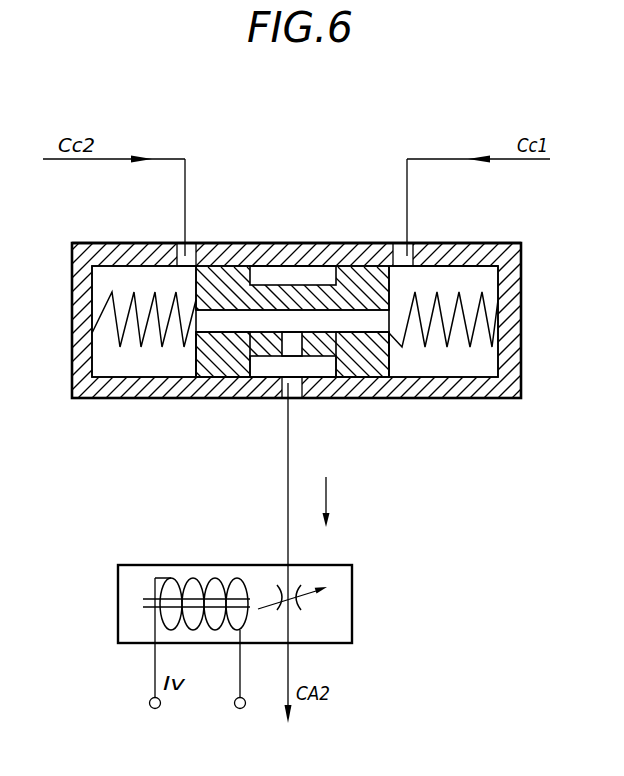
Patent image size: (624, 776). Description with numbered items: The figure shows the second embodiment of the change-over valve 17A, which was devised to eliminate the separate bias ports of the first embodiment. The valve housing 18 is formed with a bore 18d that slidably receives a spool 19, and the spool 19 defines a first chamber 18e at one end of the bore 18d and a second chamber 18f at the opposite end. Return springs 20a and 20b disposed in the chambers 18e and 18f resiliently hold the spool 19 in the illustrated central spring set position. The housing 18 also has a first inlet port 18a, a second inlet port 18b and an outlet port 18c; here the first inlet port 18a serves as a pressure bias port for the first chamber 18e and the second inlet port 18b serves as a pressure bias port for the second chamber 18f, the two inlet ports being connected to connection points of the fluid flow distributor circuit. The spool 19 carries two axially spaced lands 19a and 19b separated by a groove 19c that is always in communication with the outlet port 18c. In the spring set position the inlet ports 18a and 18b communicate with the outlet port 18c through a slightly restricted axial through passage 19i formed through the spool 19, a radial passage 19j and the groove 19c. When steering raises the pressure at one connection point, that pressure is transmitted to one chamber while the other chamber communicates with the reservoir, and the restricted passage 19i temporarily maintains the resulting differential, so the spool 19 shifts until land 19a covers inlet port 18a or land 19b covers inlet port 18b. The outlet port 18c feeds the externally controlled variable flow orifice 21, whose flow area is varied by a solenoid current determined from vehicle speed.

The change-over valve 17A is at (287, 236).
The valve housing 18 is at (513, 372).
The first inlet port 18a is at (179, 243).
The second inlet port 18b is at (395, 243).
The outlet port 18c is at (297, 403).
The bore 18d is at (476, 270).
The first chamber 18e is at (152, 286).
The second chamber 18f is at (455, 374).
The spool 19 is at (390, 280).
The land 19a is at (220, 370).
The land 19b is at (377, 370).
The groove 19c is at (318, 276).
The axial through passage 19i is at (362, 323).
The radial passage 19j is at (287, 352).
The return spring 20a is at (140, 343).
The return spring 20b is at (472, 345).
The externally controlled variable flow orifice 21 is at (352, 602).